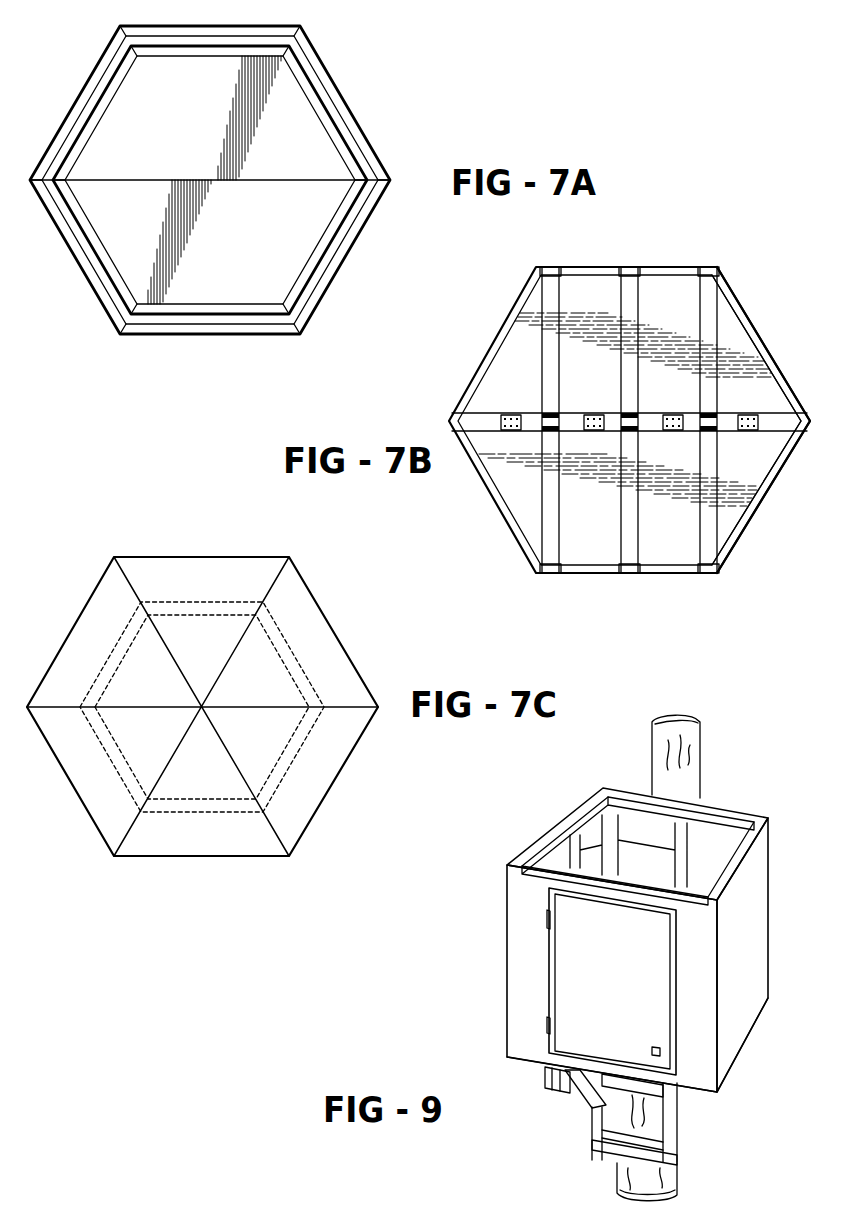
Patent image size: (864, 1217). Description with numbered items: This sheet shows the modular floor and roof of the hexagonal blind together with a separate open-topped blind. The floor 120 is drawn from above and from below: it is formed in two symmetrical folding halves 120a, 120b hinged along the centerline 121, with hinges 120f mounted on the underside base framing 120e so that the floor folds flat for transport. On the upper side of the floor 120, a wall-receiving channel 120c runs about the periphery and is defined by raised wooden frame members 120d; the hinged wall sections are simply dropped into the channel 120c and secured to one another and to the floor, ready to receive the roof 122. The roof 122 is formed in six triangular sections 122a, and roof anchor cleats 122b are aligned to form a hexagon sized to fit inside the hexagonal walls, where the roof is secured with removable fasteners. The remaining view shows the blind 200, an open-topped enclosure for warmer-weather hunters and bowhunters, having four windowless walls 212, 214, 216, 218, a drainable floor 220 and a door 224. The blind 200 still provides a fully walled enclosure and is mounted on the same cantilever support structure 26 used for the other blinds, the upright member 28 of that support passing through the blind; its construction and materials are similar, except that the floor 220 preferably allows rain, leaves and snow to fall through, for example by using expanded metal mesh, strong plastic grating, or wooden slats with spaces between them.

In FIG. 7A, the floor 120 is at (378, 121).
In FIG. 7B, the floor 120 is at (692, 215).
In FIG. 7A, the folding half 120a is at (280, 82).
In FIG. 7B, the folding half 120a is at (603, 549).
In FIG. 7A, the folding half 120b is at (247, 297).
In FIG. 7B, the folding half 120b is at (605, 284).
In FIG. 7A, the wall-receiving channel 120c is at (122, 48).
In FIG. 7A, the raised wooden frame members 120d is at (92, 125).
In FIG. 7B, the base framing 120e is at (755, 494).
In FIG. 7B, the hinges 120f is at (672, 416).
In FIG. 7A, the centerline 121 is at (210, 159).
In FIG. 7B, the centerline 121 is at (775, 417).
In FIG. 7C, the roof 122 is at (151, 523).
In FIG. 7C, the triangular sections 122a is at (229, 567).
In FIG. 7C, the roof anchor cleats 122b is at (275, 620).
In FIG. 9, the blind 200 is at (783, 802).
In FIG. 9, the wall 212 is at (517, 972).
In FIG. 9, the wall 214 is at (533, 842).
In FIG. 9, the wall 216 is at (757, 917).
In FIG. 9, the wall 218 is at (628, 793).
In FIG. 9, the drainable floor 220 is at (695, 1097).
In FIG. 9, the door 224 is at (587, 994).
In FIG. 9, the cantilever support structure 26 is at (568, 1109).
In FIG. 9, the support post 28 is at (693, 750).